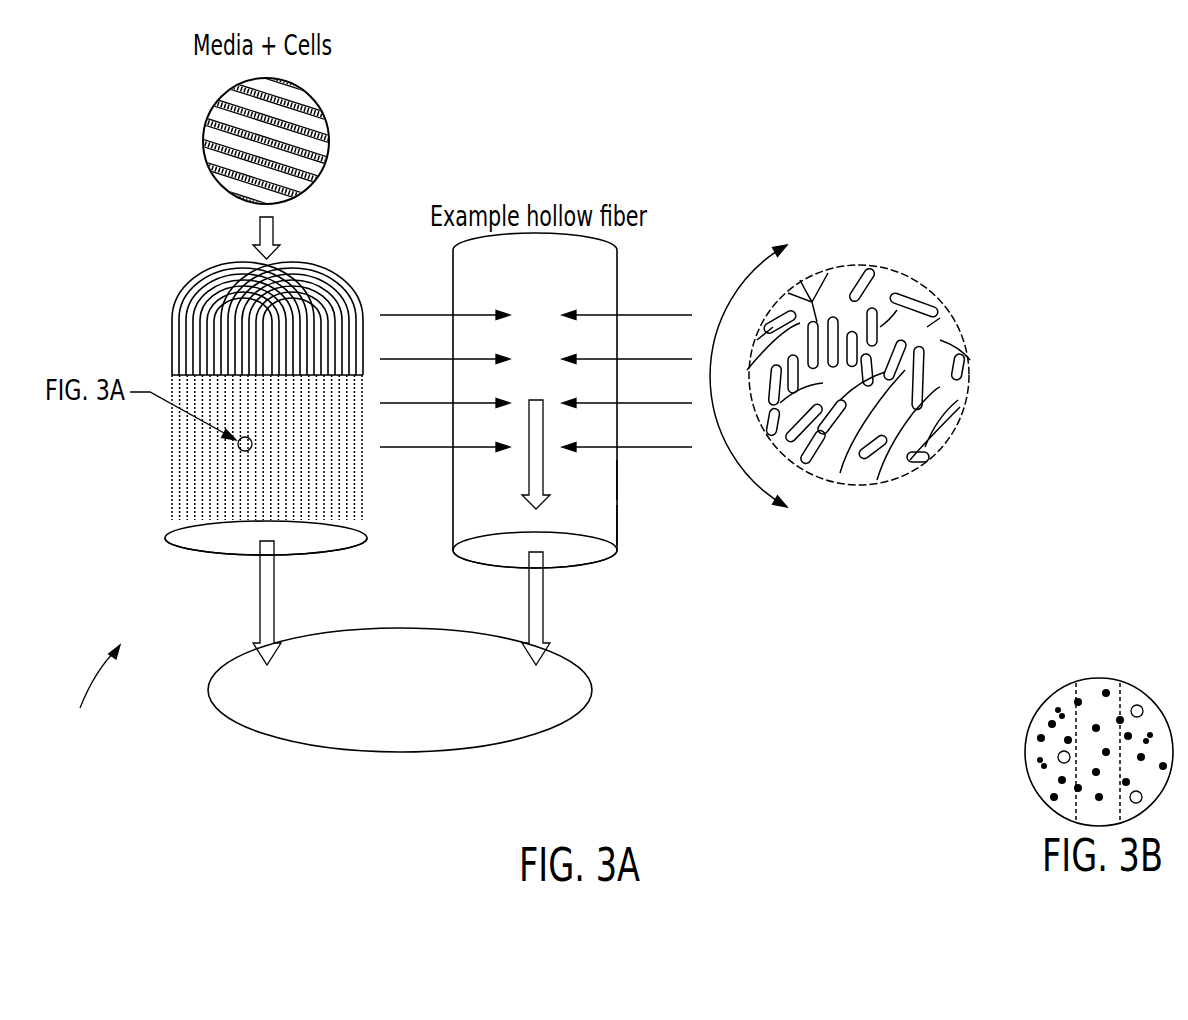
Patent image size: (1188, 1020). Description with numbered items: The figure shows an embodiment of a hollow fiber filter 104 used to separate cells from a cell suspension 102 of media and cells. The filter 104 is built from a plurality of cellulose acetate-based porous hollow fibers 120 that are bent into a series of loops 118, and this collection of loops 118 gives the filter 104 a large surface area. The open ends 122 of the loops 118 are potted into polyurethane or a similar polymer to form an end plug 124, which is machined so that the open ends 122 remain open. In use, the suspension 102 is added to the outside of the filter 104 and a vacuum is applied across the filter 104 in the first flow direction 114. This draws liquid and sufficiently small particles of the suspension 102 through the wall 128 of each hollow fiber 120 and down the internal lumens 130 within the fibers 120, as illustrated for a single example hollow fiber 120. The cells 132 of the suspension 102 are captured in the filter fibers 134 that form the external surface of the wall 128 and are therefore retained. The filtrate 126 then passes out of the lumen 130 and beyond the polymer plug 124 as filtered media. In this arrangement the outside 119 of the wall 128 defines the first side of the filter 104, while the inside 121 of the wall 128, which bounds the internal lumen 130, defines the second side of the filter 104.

The suspension 102 is at (222, 97).
The filter 104 is at (91, 694).
The first flow direction 114 is at (258, 605).
The loops 118 is at (205, 287).
The outside of the wall 119 is at (612, 482).
The hollow fibers 120 is at (197, 323).
The inside of the wall 121 is at (562, 553).
The open ends 122 is at (603, 556).
The end plug 124 is at (366, 536).
The filtrate 126 is at (330, 748).
The wall 128 is at (612, 521).
The internal lumens 130 is at (495, 553).
The cells 132 is at (932, 297).
The filter fibers 134 is at (978, 402).